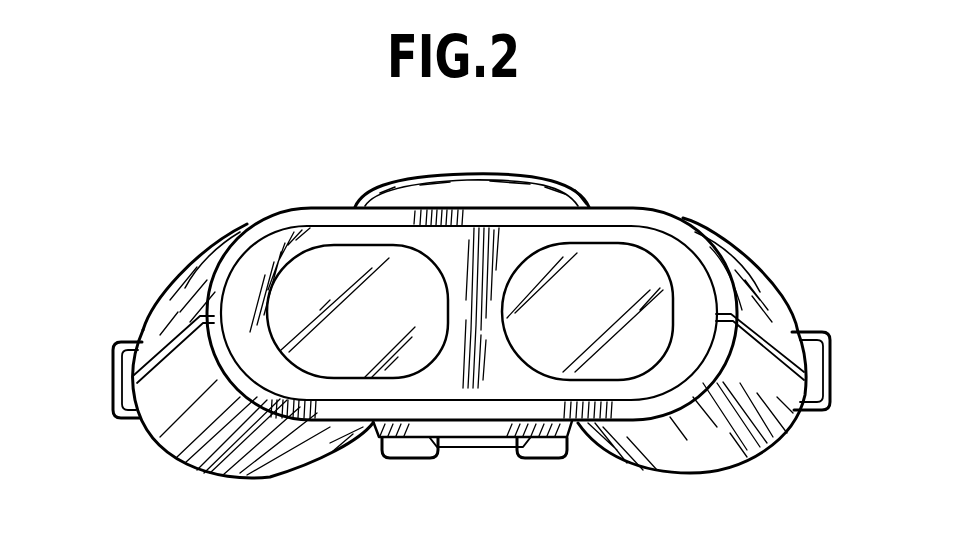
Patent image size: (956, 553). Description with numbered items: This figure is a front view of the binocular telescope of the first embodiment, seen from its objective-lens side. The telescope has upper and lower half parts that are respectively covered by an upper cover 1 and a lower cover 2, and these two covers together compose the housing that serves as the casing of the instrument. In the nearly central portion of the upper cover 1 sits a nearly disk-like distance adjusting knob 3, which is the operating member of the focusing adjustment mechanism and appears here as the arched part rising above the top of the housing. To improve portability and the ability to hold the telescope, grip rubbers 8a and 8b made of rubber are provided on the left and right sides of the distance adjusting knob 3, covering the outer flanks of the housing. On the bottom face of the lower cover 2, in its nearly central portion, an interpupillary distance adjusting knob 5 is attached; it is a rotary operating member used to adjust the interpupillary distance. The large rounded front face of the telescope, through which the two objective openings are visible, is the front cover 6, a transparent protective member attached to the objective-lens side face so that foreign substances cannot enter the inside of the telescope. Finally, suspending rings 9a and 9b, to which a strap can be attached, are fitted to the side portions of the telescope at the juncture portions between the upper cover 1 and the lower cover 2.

The upper cover 1 is at (777, 313).
The lower cover 2 is at (750, 463).
The distance adjusting knob 3 is at (516, 178).
The interpupillary distance adjusting knob 5 is at (540, 447).
The front cover 6 is at (537, 237).
The grip rubber 8a is at (172, 278).
The grip rubber 8b is at (768, 273).
The suspending ring 9a is at (118, 415).
The suspending ring 9b is at (828, 377).